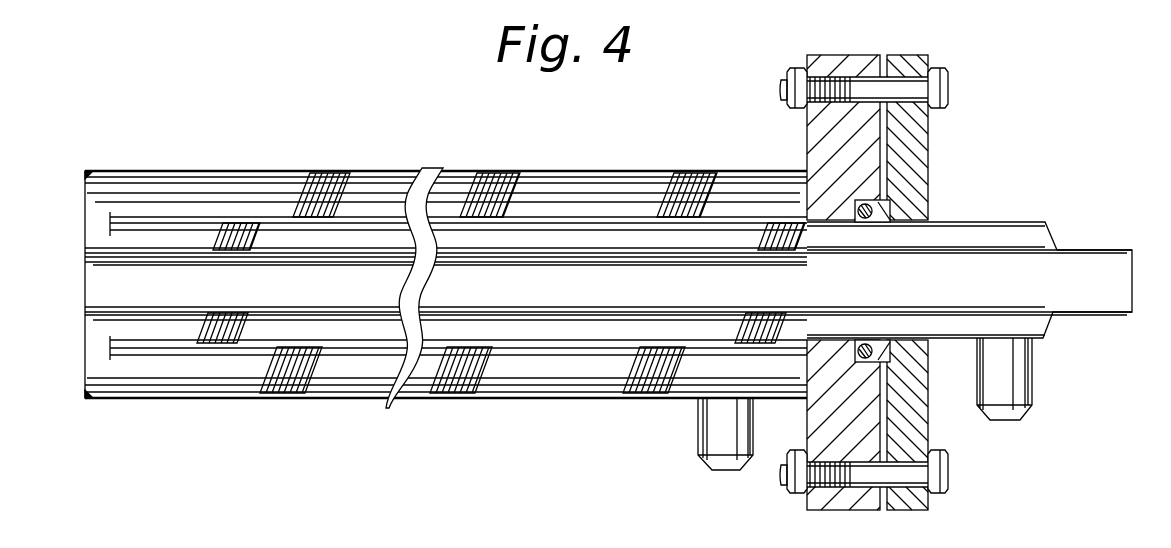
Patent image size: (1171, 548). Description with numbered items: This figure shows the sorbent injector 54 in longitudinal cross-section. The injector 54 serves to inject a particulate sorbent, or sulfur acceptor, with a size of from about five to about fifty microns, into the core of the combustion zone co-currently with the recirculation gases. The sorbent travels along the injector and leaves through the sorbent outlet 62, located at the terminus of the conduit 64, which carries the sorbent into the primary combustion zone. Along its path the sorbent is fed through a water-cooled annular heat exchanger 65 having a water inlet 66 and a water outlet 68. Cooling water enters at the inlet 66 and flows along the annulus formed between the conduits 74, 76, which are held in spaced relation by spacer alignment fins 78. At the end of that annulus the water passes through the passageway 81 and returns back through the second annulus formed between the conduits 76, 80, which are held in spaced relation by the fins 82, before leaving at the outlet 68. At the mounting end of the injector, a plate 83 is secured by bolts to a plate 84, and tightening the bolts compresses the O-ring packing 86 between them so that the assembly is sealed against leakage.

The sorbent injector 54 is at (484, 396).
The sorbent outlet 62 is at (85, 290).
The conduit 64 is at (1080, 250).
The water-cooled annular heat exchanger 65 is at (538, 367).
The water inlet 66 is at (698, 440).
The water outlet 68 is at (1035, 365).
The conduit 74 is at (597, 392).
The conduit 76 is at (434, 355).
The spacer alignment fins 78 is at (492, 190).
The conduit 80 is at (573, 311).
The passageway 81 is at (100, 230).
The fins 82 is at (782, 311).
The plate 83 is at (807, 133).
The plate 84 is at (928, 432).
The O-ring packing 86 is at (880, 355).